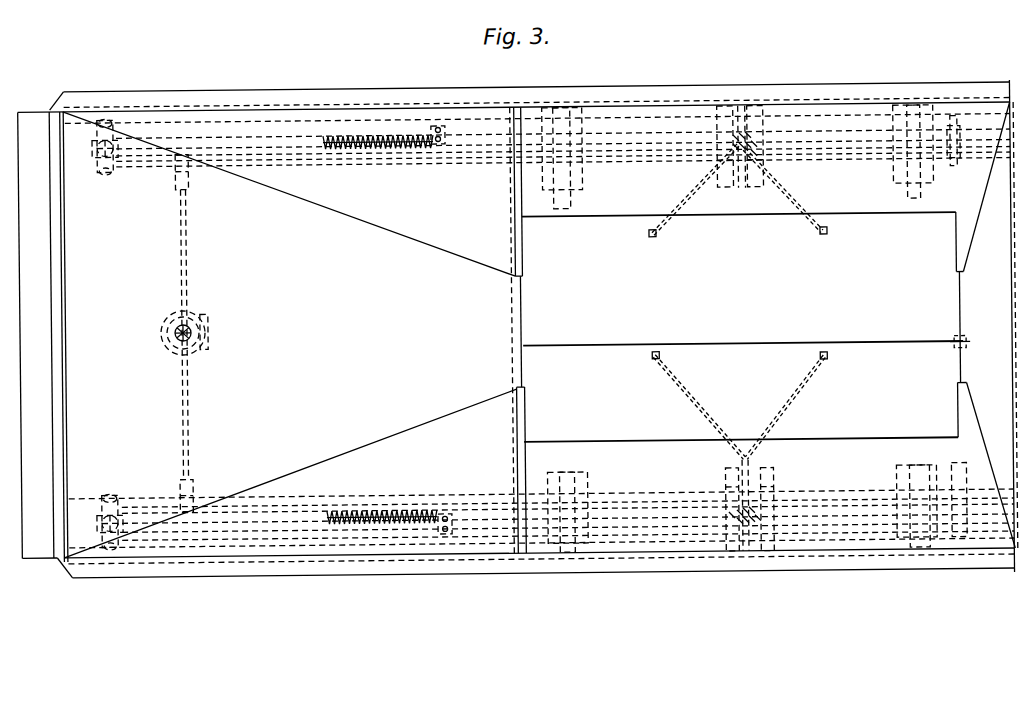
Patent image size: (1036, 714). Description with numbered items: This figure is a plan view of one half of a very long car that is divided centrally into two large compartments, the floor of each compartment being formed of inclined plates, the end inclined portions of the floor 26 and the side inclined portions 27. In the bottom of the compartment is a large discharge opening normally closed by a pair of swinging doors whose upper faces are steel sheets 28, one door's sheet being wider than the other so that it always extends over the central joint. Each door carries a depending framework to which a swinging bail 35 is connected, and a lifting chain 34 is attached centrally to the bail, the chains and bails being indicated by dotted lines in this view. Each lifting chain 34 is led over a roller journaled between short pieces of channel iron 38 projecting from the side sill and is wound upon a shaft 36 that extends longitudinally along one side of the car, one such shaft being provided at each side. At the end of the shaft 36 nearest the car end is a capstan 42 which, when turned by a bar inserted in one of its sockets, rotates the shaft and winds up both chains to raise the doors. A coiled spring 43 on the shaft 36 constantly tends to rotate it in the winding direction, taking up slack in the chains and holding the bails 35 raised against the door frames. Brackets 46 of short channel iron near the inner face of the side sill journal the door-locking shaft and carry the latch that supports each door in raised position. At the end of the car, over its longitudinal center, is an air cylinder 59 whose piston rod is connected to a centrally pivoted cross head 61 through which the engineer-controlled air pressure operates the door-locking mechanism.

The end inclined portions of the floor 26 is at (500, 315).
The side inclined portions of the floor 27 is at (642, 201).
The upper face of the swinging door 28 is at (937, 364).
The lifting chain 34 is at (741, 191).
The swinging bail 35 is at (797, 198).
The shaft 36 is at (152, 141).
The short pieces of channel iron 38 is at (725, 194).
The capstan 42 is at (104, 172).
The coiled spring 43 is at (378, 150).
The brackets 46 is at (577, 190).
The air cylinder 59 is at (200, 313).
The cross head 61 is at (191, 404).